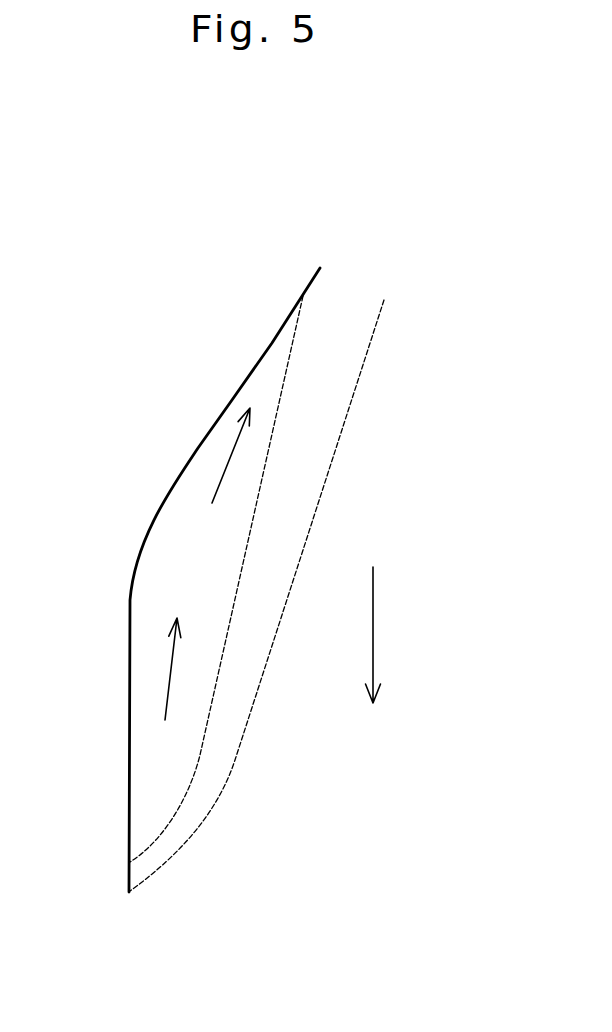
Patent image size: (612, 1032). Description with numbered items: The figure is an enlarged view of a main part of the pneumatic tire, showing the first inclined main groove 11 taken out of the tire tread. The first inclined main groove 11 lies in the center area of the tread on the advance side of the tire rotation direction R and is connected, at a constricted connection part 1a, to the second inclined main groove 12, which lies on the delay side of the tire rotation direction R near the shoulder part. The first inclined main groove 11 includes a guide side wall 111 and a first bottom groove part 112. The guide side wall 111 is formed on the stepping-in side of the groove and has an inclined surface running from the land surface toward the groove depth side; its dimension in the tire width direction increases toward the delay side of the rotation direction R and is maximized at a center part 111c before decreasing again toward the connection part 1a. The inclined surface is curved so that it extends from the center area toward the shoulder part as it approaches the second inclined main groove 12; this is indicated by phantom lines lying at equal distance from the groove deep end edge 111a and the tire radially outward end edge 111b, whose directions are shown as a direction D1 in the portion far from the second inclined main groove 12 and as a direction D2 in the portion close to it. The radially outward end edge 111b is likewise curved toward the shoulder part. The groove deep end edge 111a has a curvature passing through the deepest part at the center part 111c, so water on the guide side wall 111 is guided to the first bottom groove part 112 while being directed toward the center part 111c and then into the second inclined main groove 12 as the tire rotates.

The first inclined main groove 11 is at (140, 820).
The guide side wall 111 is at (165, 560).
The groove deep end edge 111a is at (207, 722).
The tire radially outward end edge 111b is at (128, 740).
The center part 111c is at (208, 577).
The first bottom groove part 112 is at (307, 468).
The second inclined main groove 12 is at (348, 293).
The connection part 1a is at (323, 322).
The direction D1 is at (170, 668).
The direction D2 is at (232, 458).
The tire rotation direction R is at (374, 632).